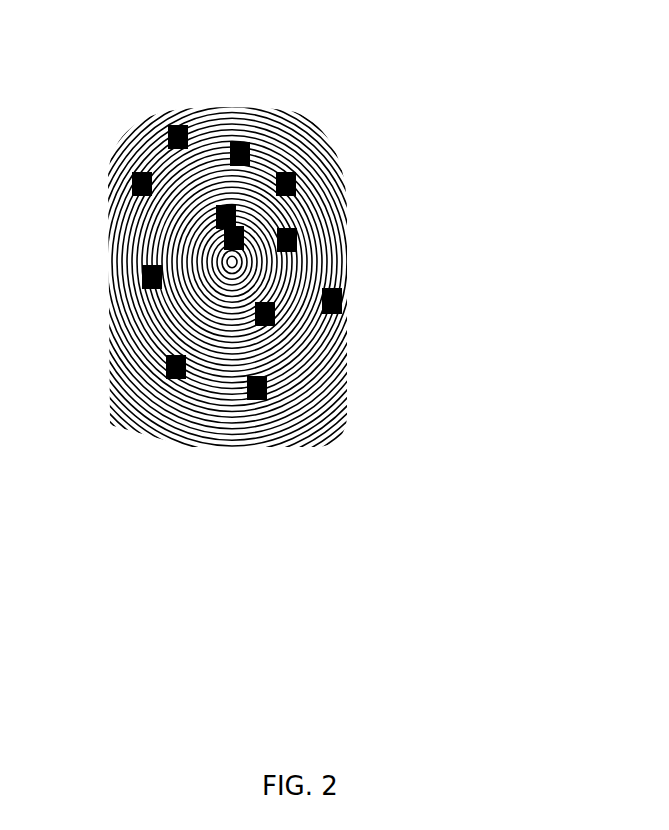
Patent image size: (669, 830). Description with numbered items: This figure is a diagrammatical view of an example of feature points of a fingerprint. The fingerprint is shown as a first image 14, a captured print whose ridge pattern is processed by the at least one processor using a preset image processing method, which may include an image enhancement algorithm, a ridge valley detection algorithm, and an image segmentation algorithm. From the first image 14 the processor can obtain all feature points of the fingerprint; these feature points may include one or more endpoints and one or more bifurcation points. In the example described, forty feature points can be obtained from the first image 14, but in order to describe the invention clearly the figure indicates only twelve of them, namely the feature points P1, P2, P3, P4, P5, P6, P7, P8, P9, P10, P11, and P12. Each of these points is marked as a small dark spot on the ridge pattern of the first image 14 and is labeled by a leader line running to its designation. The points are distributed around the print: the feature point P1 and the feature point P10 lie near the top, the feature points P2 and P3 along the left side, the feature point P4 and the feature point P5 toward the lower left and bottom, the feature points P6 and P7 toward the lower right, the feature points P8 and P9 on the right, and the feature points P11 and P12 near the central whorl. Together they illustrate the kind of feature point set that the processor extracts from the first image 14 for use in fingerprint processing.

The first image 14 is at (212, 135).
The feature point P1 is at (177, 137).
The feature point P2 is at (141, 191).
The feature point P3 is at (167, 275).
The feature point P4 is at (180, 368).
The feature point P5 is at (262, 397).
The feature point P6 is at (268, 322).
The feature point P7 is at (330, 308).
The feature point P8 is at (287, 250).
The feature point P9 is at (292, 191).
The feature point P10 is at (241, 165).
The feature point P11 is at (222, 215).
The feature point P12 is at (238, 236).